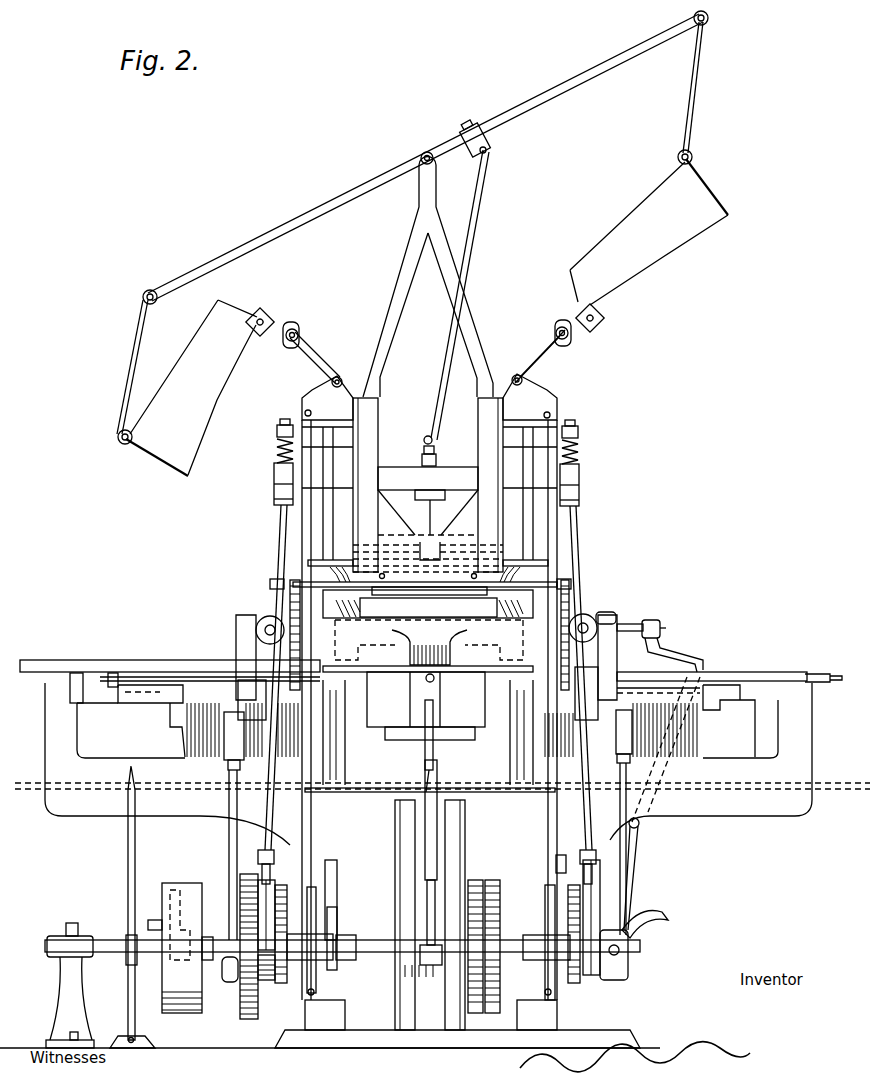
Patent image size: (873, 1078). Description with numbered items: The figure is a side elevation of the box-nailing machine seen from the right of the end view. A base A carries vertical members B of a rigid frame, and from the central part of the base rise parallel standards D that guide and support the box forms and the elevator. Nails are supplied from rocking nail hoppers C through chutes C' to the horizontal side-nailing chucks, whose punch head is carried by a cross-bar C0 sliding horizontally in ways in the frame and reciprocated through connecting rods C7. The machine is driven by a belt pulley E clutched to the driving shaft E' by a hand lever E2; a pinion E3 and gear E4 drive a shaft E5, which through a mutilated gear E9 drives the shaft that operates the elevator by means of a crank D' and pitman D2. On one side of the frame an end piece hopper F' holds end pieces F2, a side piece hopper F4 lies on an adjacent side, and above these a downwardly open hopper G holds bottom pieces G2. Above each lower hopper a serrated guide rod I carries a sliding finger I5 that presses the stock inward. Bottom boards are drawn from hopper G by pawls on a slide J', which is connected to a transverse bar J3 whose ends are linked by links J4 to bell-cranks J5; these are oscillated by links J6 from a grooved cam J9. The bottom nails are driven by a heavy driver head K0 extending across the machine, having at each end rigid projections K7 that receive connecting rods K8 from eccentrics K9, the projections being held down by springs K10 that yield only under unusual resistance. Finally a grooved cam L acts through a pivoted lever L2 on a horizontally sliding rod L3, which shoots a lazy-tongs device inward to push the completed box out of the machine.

The base A is at (372, 1045).
The vertical members of the frame B is at (408, 268).
The nail hopper C is at (422, 249).
The nail chute C' is at (427, 353).
The cross-bar C0 is at (428, 627).
The connecting rod C7 is at (658, 836).
The standard D is at (425, 915).
The crank D' is at (417, 928).
The pitman D2 is at (440, 820).
The belt pulley E is at (175, 938).
The driving shaft E' is at (75, 978).
The hand lever E2 is at (126, 860).
The pinion E3 is at (236, 975).
The gear E4 is at (242, 876).
The shaft E5 is at (358, 940).
The mutilated gear E9 is at (478, 880).
The end piece hopper F' is at (442, 752).
The end piece F2 is at (193, 735).
The side piece hopper F4 is at (503, 764).
The bottom piece hopper G is at (428, 485).
The bottom piece G2 is at (448, 562).
The guide rod I is at (438, 678).
The finger I5 is at (440, 728).
The slide J' is at (428, 607).
The transverse bar J3 is at (429, 602).
The link J4 is at (562, 584).
The bell-crank J5 is at (284, 610).
The link J6 is at (562, 858).
The cam J9 is at (598, 992).
The driver head K0 is at (434, 304).
The rigid projection K7 is at (274, 480).
The connecting rod K8 is at (280, 540).
The eccentric K9 is at (602, 912).
The spring K10 is at (276, 452).
The cam L is at (648, 930).
The pivoted lever L2 is at (695, 662).
The sliding rod L3 is at (664, 630).